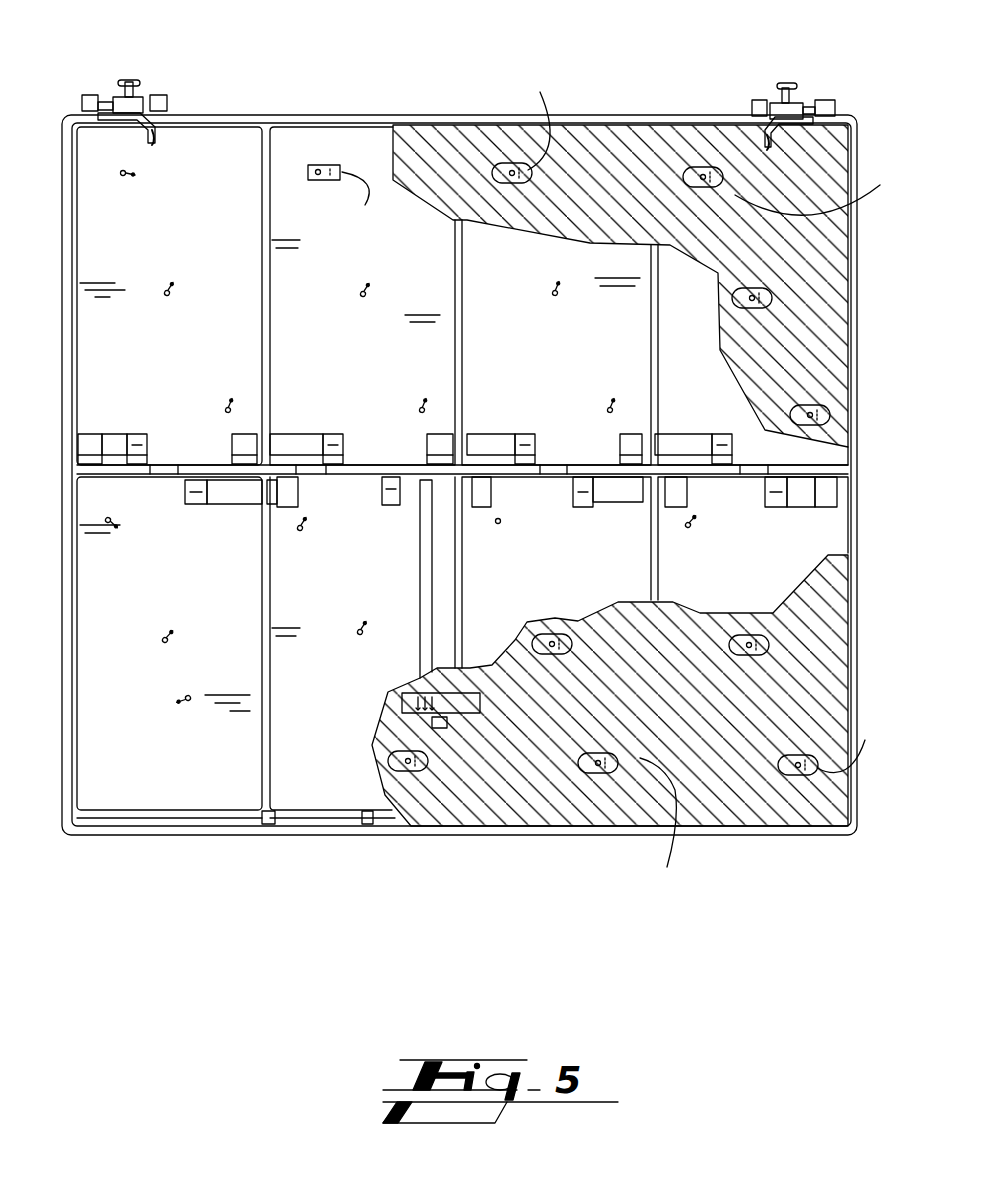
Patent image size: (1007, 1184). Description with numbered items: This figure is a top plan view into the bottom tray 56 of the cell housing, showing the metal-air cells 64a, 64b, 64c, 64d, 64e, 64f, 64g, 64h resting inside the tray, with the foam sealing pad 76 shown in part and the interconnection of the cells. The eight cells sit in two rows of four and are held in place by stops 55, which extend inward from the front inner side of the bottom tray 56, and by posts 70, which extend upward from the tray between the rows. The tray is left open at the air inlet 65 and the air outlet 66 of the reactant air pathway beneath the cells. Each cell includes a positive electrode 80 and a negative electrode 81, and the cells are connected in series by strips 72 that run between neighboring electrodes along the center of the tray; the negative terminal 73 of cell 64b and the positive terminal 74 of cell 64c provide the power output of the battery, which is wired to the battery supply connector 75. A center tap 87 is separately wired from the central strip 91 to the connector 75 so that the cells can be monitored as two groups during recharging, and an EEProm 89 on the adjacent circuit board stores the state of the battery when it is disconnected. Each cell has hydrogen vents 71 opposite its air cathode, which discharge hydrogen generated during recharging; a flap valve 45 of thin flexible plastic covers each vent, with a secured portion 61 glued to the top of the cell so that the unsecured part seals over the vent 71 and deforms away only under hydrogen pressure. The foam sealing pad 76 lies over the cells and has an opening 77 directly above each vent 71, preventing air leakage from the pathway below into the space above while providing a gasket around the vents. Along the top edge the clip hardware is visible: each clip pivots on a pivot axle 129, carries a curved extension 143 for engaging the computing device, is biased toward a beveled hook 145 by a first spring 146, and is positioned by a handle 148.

The flap valve 45 is at (312, 180).
The stops 55 is at (255, 820).
The bottom tray 56 is at (856, 515).
The secured portion of the flap valve 61 is at (625, 481).
The metal-air cell 64a is at (143, 580).
The metal-air cell 64b is at (338, 585).
The metal-air cell 64c is at (533, 588).
The metal-air cell 64d is at (723, 587).
The metal-air cell 64e is at (705, 343).
The metal-air cell 64f is at (545, 343).
The metal-air cell 64g is at (348, 341).
The metal-air cell 64h is at (158, 341).
The air inlet 65 is at (152, 843).
The air outlet 66 is at (316, 771).
The posts 70 is at (175, 462).
The hydrogen vents 71 is at (138, 172).
The strips 72 is at (110, 434).
The negative terminal 73 is at (391, 506).
The positive terminal 74 is at (502, 521).
The battery supply connector 75 is at (470, 668).
The foam sealing pad 76 is at (398, 440).
The opening 77 is at (510, 163).
The positive electrode 80 is at (78, 440).
The negative electrode 81 is at (136, 434).
The center tap 87 is at (434, 579).
The EEProm 89 is at (403, 698).
The central strip 91 is at (490, 434).
The pivot axle 129 is at (100, 122).
The curved extension 143 is at (173, 125).
The beveled hook 145 is at (158, 95).
The first spring 146 is at (90, 95).
The handle 148 is at (130, 80).